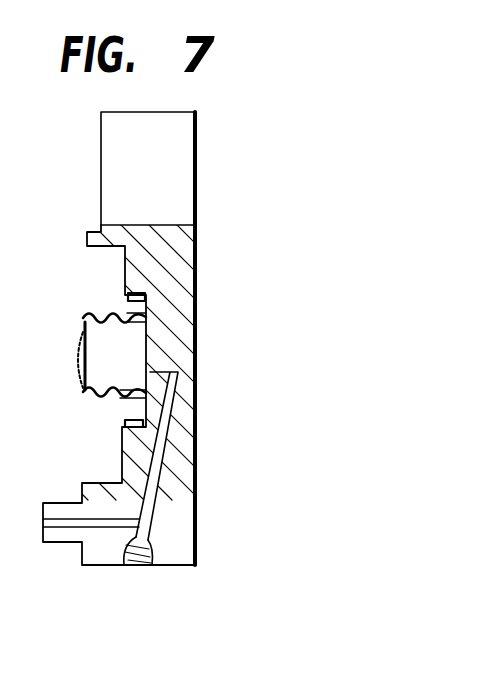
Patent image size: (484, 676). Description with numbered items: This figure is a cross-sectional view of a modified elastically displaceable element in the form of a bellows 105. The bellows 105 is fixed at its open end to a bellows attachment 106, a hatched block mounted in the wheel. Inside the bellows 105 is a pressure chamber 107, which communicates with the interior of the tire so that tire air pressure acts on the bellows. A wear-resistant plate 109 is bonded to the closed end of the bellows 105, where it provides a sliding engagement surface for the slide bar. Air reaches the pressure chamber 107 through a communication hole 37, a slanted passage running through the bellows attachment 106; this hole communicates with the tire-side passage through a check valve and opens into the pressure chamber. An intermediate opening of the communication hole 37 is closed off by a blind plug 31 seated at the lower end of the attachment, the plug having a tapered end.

The blind plug 31 is at (137, 565).
The communication hole 37 is at (155, 468).
The bellows 105 is at (90, 317).
The bellows attachment 106 is at (197, 262).
The pressure chamber 107 is at (132, 348).
The wear-resistant plate 109 is at (77, 346).